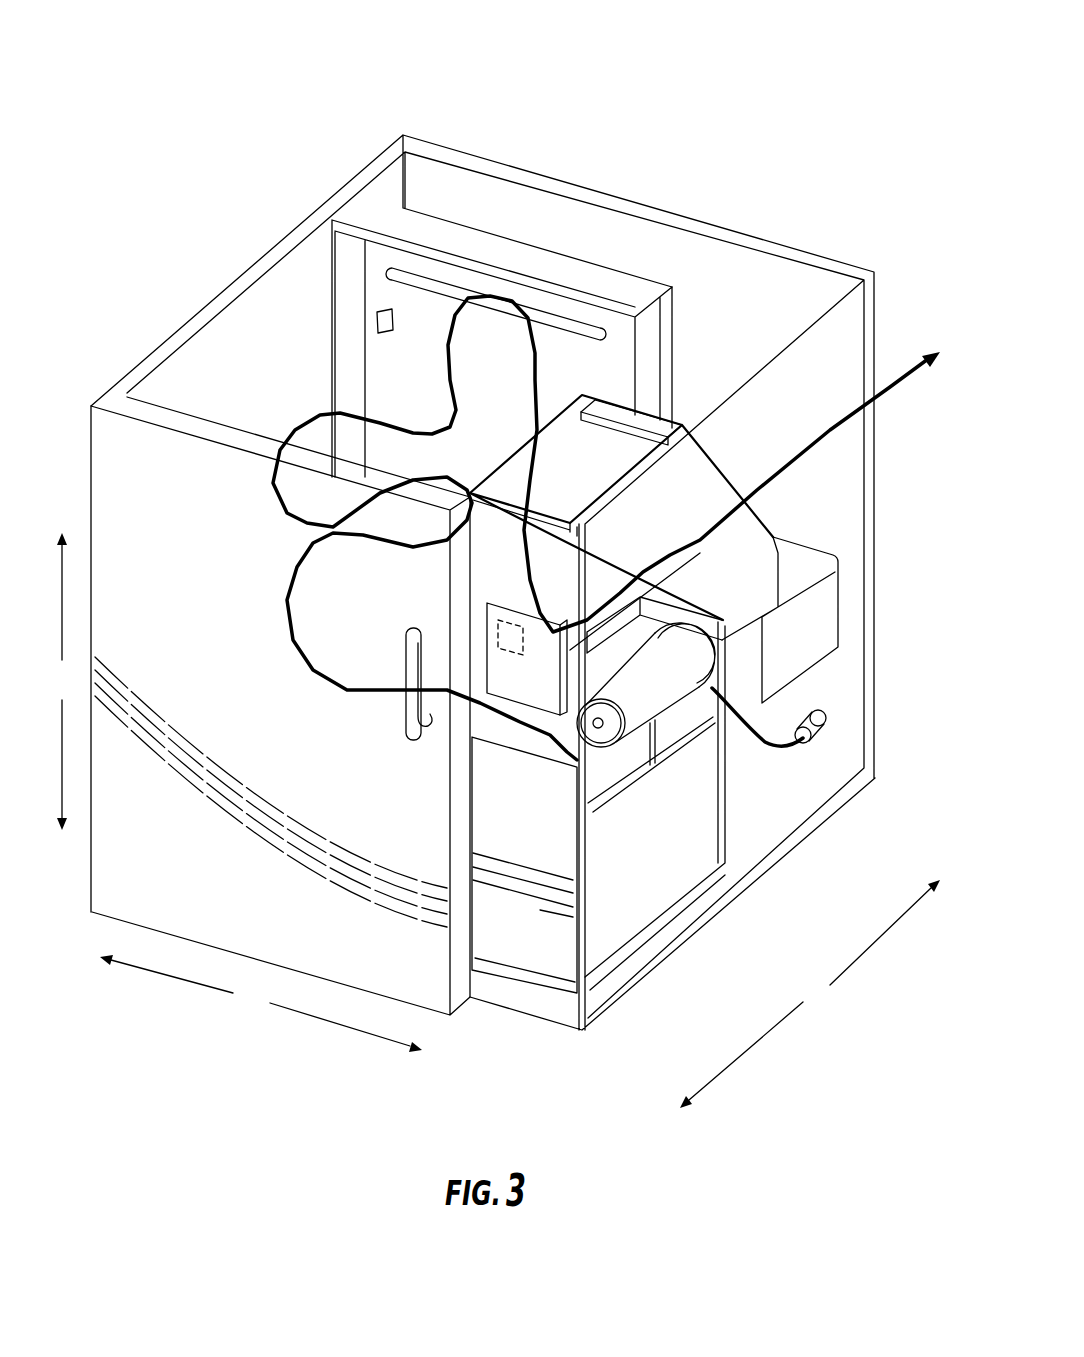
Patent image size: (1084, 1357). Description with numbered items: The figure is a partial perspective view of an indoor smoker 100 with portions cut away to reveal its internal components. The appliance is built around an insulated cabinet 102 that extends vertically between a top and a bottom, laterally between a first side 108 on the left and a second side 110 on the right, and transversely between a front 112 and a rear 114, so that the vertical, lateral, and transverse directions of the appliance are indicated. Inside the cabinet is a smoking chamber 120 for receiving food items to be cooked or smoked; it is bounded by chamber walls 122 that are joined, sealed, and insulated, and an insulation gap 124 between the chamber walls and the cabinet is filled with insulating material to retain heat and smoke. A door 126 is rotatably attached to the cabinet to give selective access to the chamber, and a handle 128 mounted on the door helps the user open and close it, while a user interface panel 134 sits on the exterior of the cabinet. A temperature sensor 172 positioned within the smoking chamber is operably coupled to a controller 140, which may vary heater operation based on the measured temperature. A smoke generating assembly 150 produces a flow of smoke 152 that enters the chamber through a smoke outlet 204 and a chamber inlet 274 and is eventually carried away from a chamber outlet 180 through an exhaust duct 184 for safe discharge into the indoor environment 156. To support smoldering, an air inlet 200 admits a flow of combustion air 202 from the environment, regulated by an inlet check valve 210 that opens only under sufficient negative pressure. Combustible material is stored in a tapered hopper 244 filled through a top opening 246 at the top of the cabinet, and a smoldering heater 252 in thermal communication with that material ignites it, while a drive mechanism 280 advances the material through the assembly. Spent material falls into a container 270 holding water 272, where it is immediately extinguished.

The indoor smoker 100 is at (828, 98).
The insulated cabinet 102 is at (477, 156).
The first side 108 is at (112, 374).
The second side 110 is at (672, 965).
The front 112 is at (528, 1013).
The rear 114 is at (886, 342).
The smoking chamber 120 is at (222, 403).
The chamber walls 122 is at (195, 388).
The insulation gap 124 is at (226, 295).
The door 126 is at (209, 702).
The handle 128 is at (408, 710).
The user interface panel 134 is at (512, 676).
The controller 140 is at (497, 627).
The smoke generating assembly 150 is at (743, 756).
The flow of smoke 152 is at (452, 432).
The indoor environment 156 is at (853, 217).
The temperature sensor 172 is at (374, 320).
The chamber outlet 180 is at (558, 316).
The exhaust duct 184 is at (645, 292).
The air inlet 200 is at (830, 745).
The flow of combustion air 202 is at (800, 700).
The smoke outlet 204 is at (586, 725).
The inlet check valve 210 is at (830, 714).
The hopper 244 is at (727, 485).
The top opening 246 is at (615, 450).
The smoldering heater 252 is at (613, 755).
The container 270 is at (665, 820).
The water 272 is at (603, 826).
The chamber inlet 274 is at (522, 744).
The drive mechanism 280 is at (800, 565).